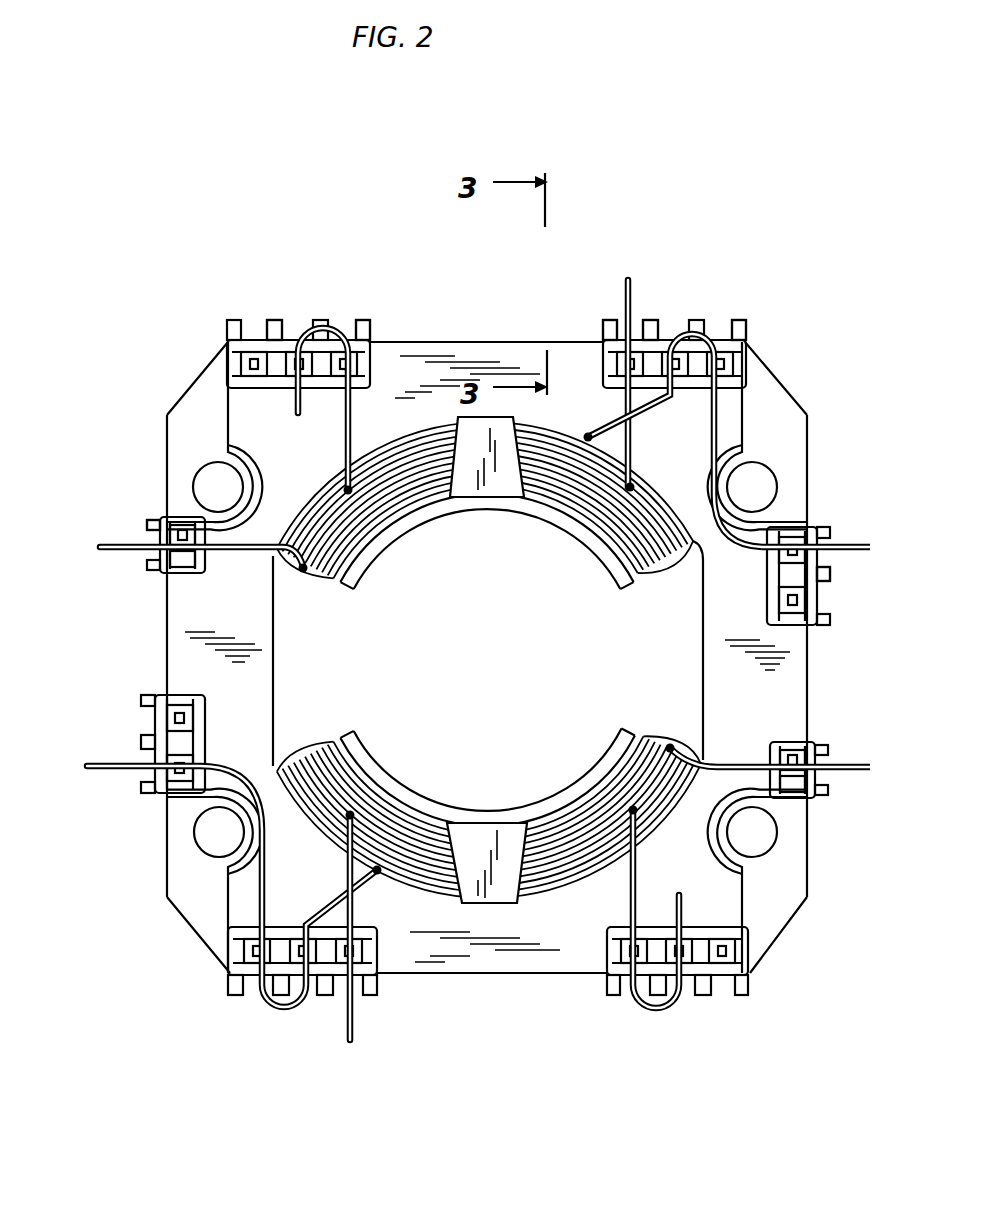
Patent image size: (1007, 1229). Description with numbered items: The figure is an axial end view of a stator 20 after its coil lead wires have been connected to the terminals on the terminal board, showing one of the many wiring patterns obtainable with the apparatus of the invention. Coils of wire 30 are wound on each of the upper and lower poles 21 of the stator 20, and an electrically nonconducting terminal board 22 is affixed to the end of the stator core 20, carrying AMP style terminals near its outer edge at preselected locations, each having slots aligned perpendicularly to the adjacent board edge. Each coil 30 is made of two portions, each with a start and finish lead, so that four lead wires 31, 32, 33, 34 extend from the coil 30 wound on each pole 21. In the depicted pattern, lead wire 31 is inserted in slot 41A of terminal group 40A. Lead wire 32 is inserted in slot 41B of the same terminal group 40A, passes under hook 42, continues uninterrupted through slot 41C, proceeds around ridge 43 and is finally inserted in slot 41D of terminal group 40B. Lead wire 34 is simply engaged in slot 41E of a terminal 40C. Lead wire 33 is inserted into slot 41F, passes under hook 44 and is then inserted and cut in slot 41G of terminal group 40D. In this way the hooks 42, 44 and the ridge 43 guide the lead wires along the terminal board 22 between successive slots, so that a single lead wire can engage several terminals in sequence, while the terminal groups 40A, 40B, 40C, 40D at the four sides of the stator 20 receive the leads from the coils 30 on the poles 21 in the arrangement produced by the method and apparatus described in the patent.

The stator 20 is at (790, 905).
The pole 21 is at (611, 563).
The terminal board 22 is at (547, 977).
The coil 30 is at (312, 588).
The lead wire 31 is at (635, 277).
The lead wire 32 is at (862, 549).
The lead wire 33 is at (360, 410).
The lead wire 34 is at (100, 547).
The terminal group 40A is at (748, 350).
The terminal group 40B is at (830, 620).
The terminal 40C is at (152, 575).
The terminal group 40D is at (222, 343).
The slot 41A is at (623, 327).
The slot 41B is at (672, 322).
The slot 41C is at (738, 325).
The slot 41D is at (820, 540).
The slot 41E is at (155, 527).
The slot 41F is at (352, 326).
The slot 41G is at (285, 326).
The hook 42 is at (705, 327).
The ridge 43 is at (765, 449).
The hook 44 is at (320, 326).